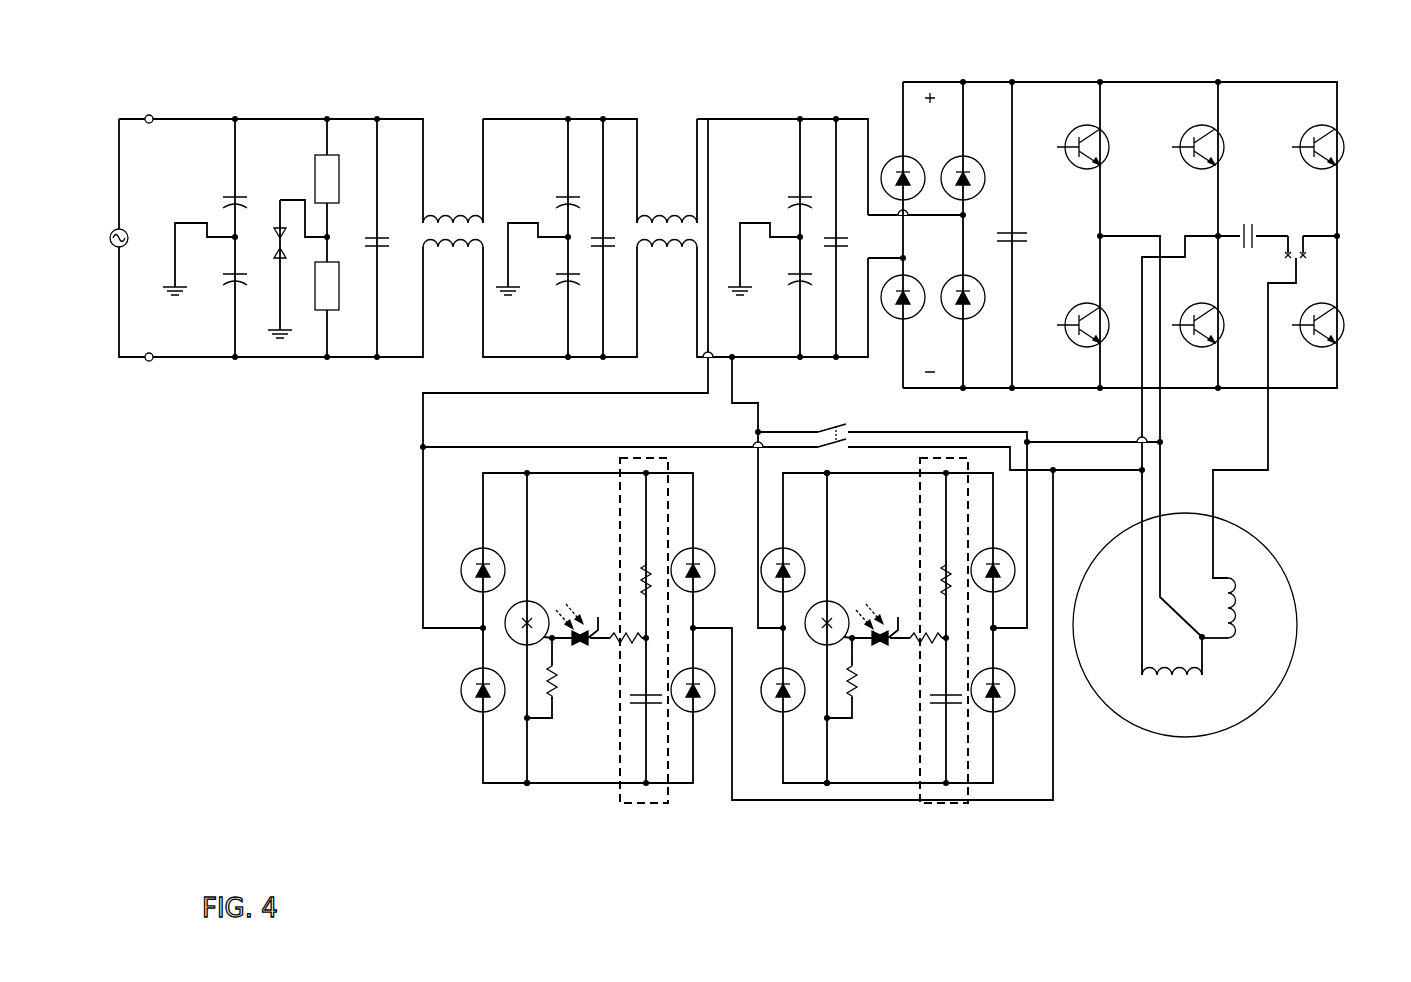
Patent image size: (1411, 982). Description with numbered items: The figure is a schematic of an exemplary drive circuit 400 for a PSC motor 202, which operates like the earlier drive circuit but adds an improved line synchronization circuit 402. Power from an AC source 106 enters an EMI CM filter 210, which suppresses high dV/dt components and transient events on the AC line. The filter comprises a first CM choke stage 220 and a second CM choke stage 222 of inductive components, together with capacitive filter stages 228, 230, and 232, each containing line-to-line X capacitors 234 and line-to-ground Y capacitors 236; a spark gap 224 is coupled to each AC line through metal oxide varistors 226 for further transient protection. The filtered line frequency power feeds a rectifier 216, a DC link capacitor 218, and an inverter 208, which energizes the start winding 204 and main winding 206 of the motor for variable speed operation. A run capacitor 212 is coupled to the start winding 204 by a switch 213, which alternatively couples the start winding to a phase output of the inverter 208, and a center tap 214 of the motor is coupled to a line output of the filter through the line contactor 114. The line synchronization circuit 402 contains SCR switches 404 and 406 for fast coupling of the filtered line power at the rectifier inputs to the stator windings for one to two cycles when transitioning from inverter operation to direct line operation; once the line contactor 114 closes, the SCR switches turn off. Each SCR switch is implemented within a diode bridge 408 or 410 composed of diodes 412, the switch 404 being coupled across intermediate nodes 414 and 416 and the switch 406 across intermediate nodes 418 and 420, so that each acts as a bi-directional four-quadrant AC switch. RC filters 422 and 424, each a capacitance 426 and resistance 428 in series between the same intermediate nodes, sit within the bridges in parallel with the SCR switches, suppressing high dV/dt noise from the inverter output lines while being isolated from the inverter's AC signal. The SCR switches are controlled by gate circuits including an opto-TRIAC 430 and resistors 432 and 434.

The drive circuit 400 is at (265, 96).
The AC source 106 is at (128, 230).
The spark gap 224 is at (278, 194).
The metal oxide varistors 226 is at (340, 183).
The X capacitors 234 is at (385, 228).
The Y capacitors 236 is at (219, 287).
The first CM choke stage 220 is at (448, 270).
The second CM choke stage 222 is at (665, 270).
The capacitive filter stage 228 is at (301, 382).
The capacitive filter stage 230 is at (587, 110).
The capacitive filter stage 232 is at (817, 110).
The EMI CM filter 210 is at (493, 246).
The rectifier 216 is at (934, 76).
The DC link capacitor 218 is at (1028, 205).
The inverter 208 is at (1193, 76).
The run capacitor 212 is at (1258, 205).
The switch 213 is at (1312, 260).
The line contactor 114 is at (843, 420).
The intermediate node 414 is at (527, 470).
The diodes 412 is at (483, 548).
The SCR switch 404 is at (548, 617).
The SCR switch 406 is at (848, 617).
The resistance 428 is at (638, 560).
The resistor 432 is at (648, 636).
The opto-TRIAC 430 is at (588, 660).
The resistor 434 is at (560, 692).
The capacitance 426 is at (633, 712).
The RC filter 422 is at (668, 805).
The RC filter 424 is at (969, 805).
The diode bridge 408 is at (593, 810).
The diode bridge 410 is at (898, 810).
The intermediate node 416 is at (527, 787).
The intermediate node 418 is at (835, 478).
The intermediate node 420 is at (827, 787).
The line synchronization circuit 402 is at (326, 706).
The PSC motor 202 is at (1215, 735).
The start winding 204 is at (1240, 610).
The main winding 206 is at (1150, 680).
The center tap 214 is at (1215, 652).